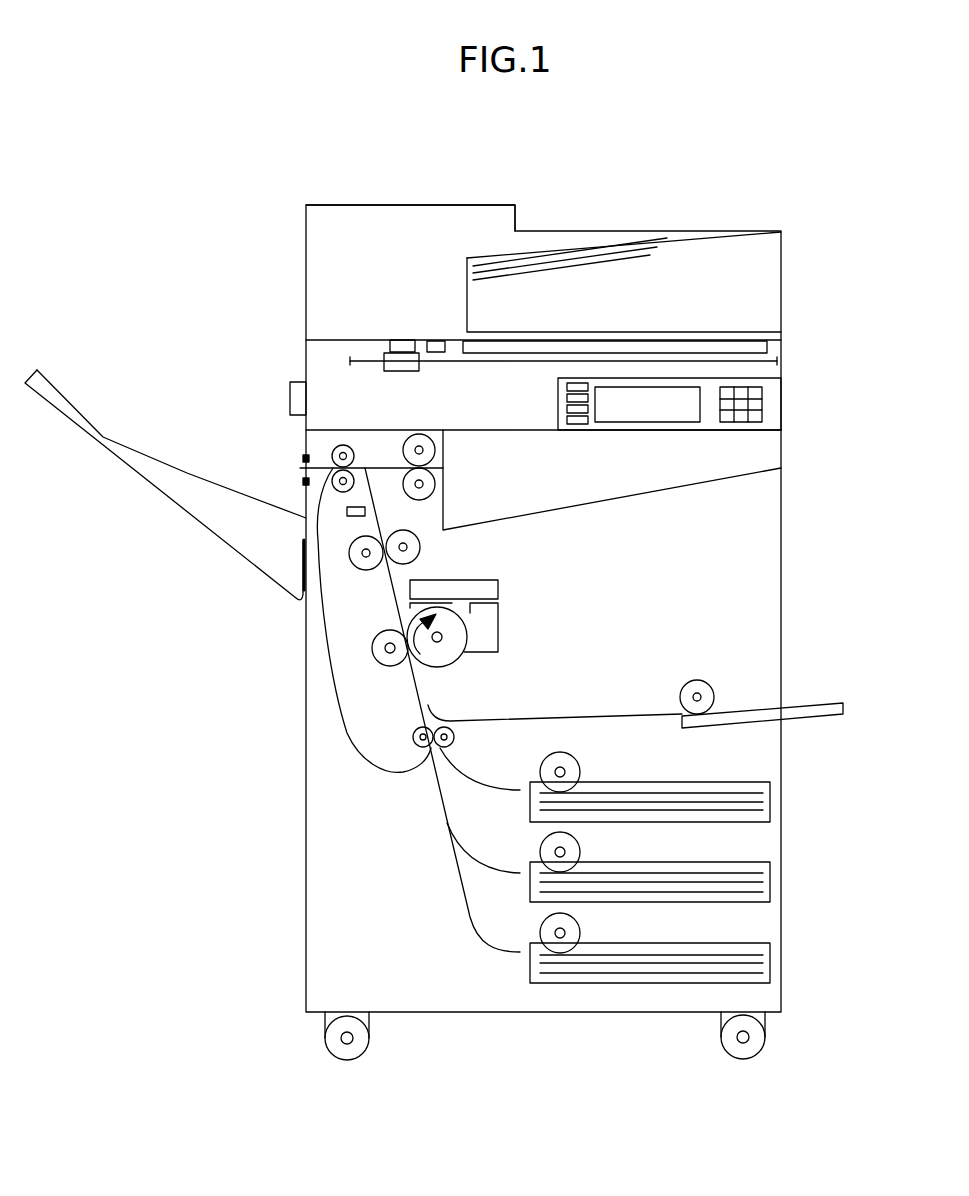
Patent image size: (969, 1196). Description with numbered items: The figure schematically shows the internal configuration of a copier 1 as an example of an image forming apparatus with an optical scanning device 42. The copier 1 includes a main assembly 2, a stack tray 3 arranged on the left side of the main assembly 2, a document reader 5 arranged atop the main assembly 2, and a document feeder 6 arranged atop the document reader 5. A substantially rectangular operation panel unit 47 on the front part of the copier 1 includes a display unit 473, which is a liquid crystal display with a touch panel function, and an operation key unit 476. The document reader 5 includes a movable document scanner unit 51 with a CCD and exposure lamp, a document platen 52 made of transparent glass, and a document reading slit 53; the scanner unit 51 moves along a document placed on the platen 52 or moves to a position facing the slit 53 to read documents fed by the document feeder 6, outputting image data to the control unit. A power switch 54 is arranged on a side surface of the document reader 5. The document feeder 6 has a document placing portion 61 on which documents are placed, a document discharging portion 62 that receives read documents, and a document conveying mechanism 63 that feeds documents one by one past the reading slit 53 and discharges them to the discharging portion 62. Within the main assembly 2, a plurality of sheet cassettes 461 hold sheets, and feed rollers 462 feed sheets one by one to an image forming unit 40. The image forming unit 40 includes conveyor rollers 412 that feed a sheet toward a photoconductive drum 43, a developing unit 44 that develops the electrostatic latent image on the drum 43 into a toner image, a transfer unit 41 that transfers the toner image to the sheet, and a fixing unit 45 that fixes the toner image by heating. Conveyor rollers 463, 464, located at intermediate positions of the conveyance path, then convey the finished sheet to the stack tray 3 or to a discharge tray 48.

The copier 1 is at (112, 204).
The main assembly 2 is at (752, 625).
The stack tray 3 is at (180, 514).
The document reader 5 is at (322, 368).
The document feeder 6 is at (581, 228).
The image forming unit 40 is at (356, 634).
The transfer unit 41 is at (384, 661).
The conveyor rollers 412 is at (418, 747).
The optical scanning device 42 is at (490, 588).
The photoconductive drum 43 is at (447, 657).
The developing unit 44 is at (490, 627).
The fixing unit 45 is at (368, 585).
The operation panel unit 47 is at (558, 396).
The display unit 473 is at (648, 424).
The operation key unit 476 is at (755, 402).
The discharge tray 48 is at (610, 499).
The sheet cassettes 461 is at (768, 807).
The feed rollers 462 is at (580, 770).
The conveyor rollers 463 is at (436, 450).
The conveyor rollers 464 is at (333, 449).
The document scanner unit 51 is at (404, 372).
The document platen 52 is at (770, 345).
The document reading slit 53 is at (398, 343).
The power switch 54 is at (290, 400).
The document placing portion 61 is at (692, 240).
The document discharging portion 62 is at (712, 328).
The document conveying mechanism 63 is at (390, 287).